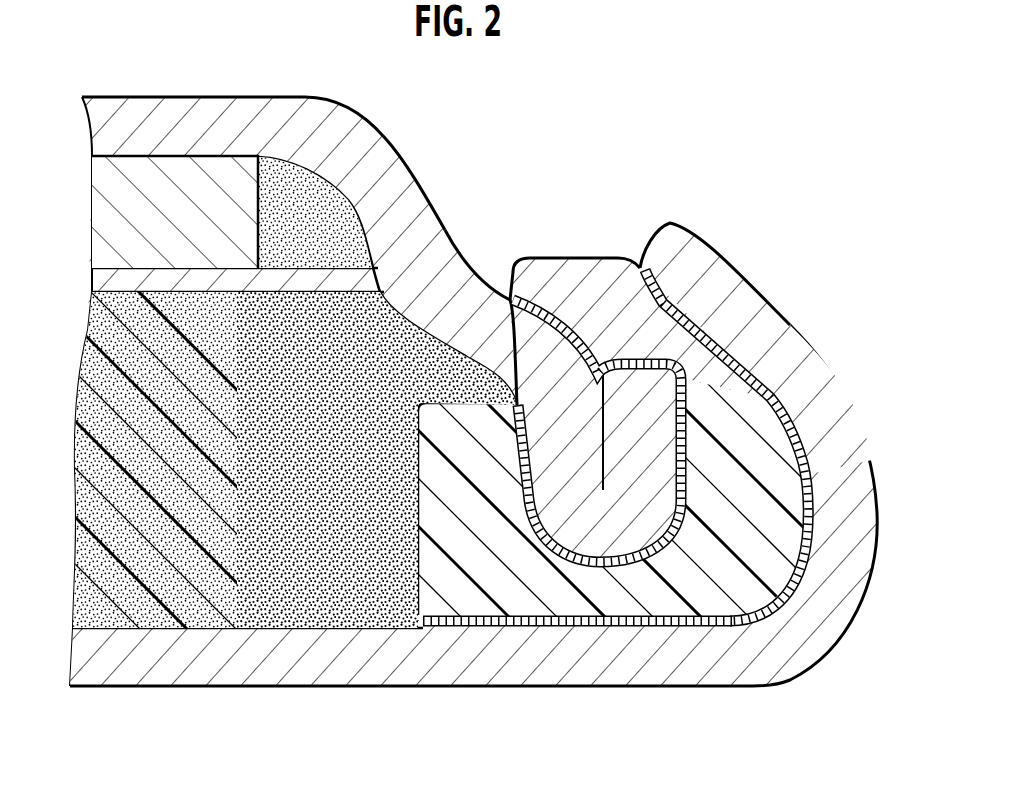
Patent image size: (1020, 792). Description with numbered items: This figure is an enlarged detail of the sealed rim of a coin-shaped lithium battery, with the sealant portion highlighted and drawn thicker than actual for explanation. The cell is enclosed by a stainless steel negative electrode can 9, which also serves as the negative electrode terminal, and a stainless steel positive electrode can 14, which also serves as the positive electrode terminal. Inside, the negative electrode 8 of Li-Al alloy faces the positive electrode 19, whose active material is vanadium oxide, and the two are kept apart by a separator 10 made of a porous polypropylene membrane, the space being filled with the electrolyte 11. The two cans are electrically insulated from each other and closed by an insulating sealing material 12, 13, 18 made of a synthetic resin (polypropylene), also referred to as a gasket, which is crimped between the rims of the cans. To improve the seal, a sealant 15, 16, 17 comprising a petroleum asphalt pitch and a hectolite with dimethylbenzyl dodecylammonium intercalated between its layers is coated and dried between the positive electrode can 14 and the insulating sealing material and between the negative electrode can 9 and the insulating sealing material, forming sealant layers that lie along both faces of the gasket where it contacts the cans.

The negative electrode 8 is at (100, 200).
The negative electrode can 9 is at (268, 96).
The separator 10 is at (393, 262).
The electrolyte 11 is at (433, 293).
The insulating sealing material 12 is at (573, 273).
The insulating sealing material 13 is at (685, 295).
The positive electrode can 14 is at (833, 357).
The sealant 15 is at (810, 463).
The sealant 16 is at (690, 537).
The sealant 17 is at (640, 627).
The insulating sealing material 18 is at (563, 603).
The positive electrode 19 is at (207, 720).